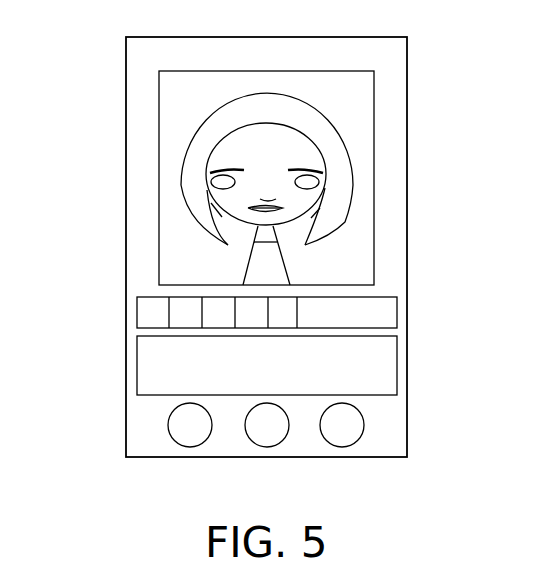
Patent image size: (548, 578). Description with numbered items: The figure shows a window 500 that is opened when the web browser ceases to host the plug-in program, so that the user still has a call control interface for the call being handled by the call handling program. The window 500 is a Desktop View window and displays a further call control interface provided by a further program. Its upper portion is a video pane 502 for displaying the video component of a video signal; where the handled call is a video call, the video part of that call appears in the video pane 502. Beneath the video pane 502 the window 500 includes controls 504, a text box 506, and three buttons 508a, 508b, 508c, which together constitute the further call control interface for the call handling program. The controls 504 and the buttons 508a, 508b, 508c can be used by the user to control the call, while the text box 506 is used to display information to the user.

The window 500 is at (407, 50).
The video pane 502 is at (159, 179).
The controls 504 is at (137, 312).
The text box 506 is at (137, 348).
The button 508a is at (193, 447).
The button 508b is at (267, 447).
The button 508c is at (342, 447).